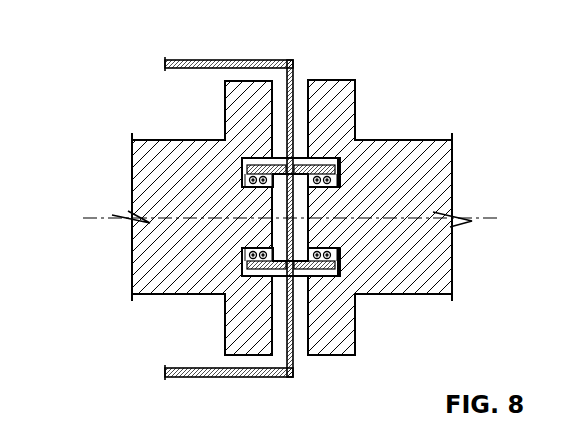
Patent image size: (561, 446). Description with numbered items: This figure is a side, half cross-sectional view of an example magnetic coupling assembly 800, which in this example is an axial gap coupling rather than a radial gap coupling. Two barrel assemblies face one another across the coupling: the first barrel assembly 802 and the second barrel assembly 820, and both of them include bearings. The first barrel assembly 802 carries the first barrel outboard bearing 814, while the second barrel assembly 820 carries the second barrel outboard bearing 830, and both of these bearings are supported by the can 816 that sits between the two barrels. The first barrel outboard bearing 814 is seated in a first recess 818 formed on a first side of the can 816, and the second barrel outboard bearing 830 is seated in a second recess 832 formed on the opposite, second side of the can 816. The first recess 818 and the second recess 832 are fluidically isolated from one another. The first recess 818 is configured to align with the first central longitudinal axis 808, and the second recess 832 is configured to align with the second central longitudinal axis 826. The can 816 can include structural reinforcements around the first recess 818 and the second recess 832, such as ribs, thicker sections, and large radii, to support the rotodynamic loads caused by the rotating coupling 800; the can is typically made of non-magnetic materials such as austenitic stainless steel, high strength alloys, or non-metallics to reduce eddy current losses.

The magnetic coupling assembly 800 is at (281, 224).
The first barrel assembly 802 is at (213, 357).
The first central longitudinal axis 808 is at (93, 220).
The first barrel outboard bearing 814 is at (268, 262).
The can 816 is at (320, 267).
The first recess 818 is at (282, 200).
The second barrel assembly 820 is at (380, 98).
The second central longitudinal axis 826 is at (472, 215).
The second barrel outboard bearing 830 is at (333, 257).
The second recess 832 is at (302, 235).